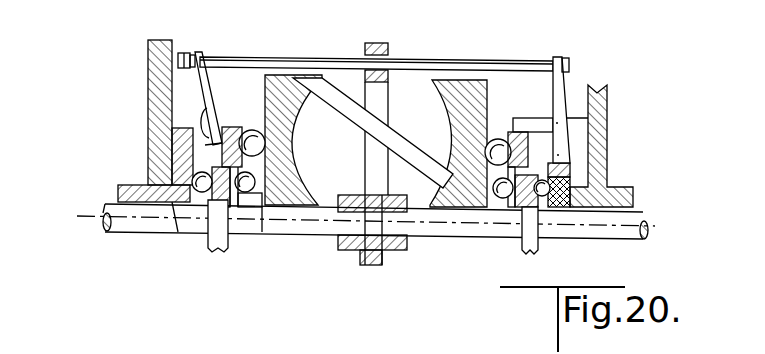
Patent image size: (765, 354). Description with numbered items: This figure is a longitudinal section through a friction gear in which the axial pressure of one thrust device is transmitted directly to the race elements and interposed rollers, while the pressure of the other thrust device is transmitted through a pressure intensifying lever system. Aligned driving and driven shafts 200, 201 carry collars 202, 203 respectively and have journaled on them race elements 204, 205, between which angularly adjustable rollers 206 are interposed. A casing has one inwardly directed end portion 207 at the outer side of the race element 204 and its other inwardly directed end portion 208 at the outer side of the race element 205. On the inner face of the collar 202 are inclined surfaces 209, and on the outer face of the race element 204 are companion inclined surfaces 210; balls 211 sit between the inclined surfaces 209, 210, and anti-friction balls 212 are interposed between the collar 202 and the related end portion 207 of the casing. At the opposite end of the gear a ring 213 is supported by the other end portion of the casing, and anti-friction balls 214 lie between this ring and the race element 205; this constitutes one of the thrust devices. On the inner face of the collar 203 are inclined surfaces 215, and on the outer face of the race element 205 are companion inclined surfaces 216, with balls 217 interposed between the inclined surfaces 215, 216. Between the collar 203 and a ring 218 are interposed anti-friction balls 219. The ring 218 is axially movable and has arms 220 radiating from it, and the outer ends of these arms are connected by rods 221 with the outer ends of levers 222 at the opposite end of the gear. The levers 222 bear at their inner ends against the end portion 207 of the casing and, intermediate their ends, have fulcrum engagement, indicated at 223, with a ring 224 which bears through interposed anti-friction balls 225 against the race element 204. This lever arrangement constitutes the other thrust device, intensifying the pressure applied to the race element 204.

The driving shaft 200 is at (102, 229).
The driven shaft 201 is at (633, 220).
The collar 202 is at (228, 246).
The collar 203 is at (533, 250).
The race element 204 is at (265, 95).
The race element 205 is at (450, 92).
The angularly adjustable rollers 206 is at (383, 140).
The inwardly directed end portion of casing 207 is at (148, 147).
The inwardly directed end portion of casing 208 is at (604, 125).
The inclined surfaces 209 is at (228, 197).
The companion inclined surfaces 210 is at (240, 198).
The balls 211 is at (265, 226).
The anti-friction balls 212 is at (175, 204).
The ring 213 is at (517, 132).
The anti-friction balls 214 is at (494, 138).
The inclined surfaces 215 is at (517, 210).
The companion inclined surfaces 216 is at (495, 207).
The balls 217 is at (512, 206).
The ring 218 is at (549, 191).
The anti-friction balls 219 is at (549, 181).
The arms 220 is at (558, 93).
The rods 221 is at (450, 67).
The levers 222 is at (201, 90).
The fulcrum engagement 223 is at (221, 121).
The ring 224 is at (213, 147).
The anti-friction balls 225 is at (252, 130).